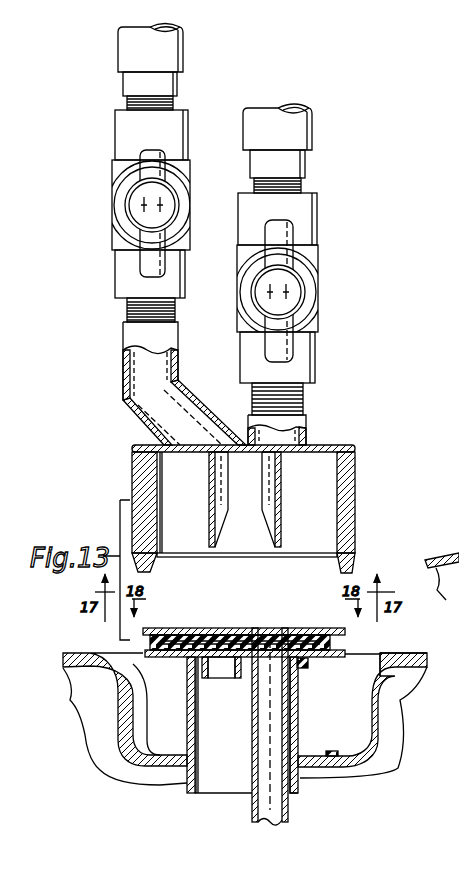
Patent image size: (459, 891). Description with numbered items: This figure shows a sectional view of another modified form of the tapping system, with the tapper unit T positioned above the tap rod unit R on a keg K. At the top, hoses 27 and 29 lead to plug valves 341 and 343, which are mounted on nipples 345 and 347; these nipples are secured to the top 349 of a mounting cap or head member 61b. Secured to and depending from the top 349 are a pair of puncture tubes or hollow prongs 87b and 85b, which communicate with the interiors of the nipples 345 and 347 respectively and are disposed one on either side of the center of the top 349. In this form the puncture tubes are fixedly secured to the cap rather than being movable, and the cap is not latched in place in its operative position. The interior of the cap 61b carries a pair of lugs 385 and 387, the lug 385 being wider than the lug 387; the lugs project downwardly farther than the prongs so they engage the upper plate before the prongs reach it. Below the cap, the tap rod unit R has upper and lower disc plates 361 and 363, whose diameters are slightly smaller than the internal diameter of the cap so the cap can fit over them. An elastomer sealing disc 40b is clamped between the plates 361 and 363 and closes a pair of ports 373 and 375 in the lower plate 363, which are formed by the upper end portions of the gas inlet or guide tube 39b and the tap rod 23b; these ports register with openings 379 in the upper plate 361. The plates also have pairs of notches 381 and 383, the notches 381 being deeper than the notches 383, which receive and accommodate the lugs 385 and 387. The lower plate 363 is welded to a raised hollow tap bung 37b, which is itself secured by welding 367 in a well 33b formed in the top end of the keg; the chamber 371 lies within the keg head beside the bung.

The hose 27 is at (126, 47).
The hose 29 is at (290, 132).
The plug valve 341 is at (112, 223).
The plug valve 343 is at (314, 302).
The nipple 345 is at (126, 402).
The nipple 347 is at (306, 404).
The top 349 is at (326, 447).
The mounting cap 61b is at (245, 499).
The lug 385 is at (140, 488).
The puncture tube 87b is at (210, 500).
The puncture tube 85b is at (282, 498).
The lug 387 is at (340, 512).
The valve assembly T is at (330, 386).
The tap rod unit R is at (308, 626).
The notch 381 is at (152, 629).
The port 373 is at (210, 636).
The opening 379 is at (228, 636).
The sealing disc 40b is at (241, 633).
The port 375 is at (281, 633).
The upper disc plate 361 is at (250, 632).
The notch 383 is at (348, 634).
The well 33b is at (386, 653).
The chamber 371 is at (125, 719).
The gas inlet tube 39b is at (222, 679).
The lower disc plate 363 is at (198, 702).
The tap bung 37b is at (300, 690).
The welding 367 is at (330, 752).
The housing K is at (249, 700).
The tap rod 23b is at (290, 816).